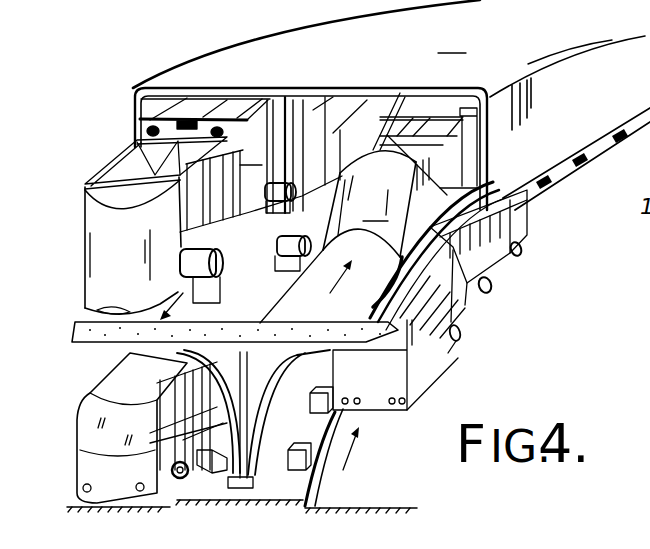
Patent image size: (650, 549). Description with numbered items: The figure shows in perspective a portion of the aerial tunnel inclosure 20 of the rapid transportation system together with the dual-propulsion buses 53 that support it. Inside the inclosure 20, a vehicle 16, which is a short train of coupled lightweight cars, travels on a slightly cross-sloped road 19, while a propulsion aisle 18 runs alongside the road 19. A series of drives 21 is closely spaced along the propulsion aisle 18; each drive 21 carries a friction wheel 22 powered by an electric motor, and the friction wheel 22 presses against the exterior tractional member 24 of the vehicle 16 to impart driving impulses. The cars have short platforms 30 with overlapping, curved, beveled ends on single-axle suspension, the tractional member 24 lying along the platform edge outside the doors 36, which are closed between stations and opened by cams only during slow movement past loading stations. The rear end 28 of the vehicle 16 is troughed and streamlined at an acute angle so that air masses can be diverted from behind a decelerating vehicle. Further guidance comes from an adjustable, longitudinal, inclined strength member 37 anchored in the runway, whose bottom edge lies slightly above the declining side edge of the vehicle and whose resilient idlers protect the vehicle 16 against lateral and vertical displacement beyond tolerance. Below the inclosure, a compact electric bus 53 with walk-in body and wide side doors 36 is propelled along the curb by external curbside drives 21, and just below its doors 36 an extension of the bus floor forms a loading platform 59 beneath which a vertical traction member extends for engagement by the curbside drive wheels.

The vehicle 16 is at (274, 162).
The propulsion aisle 18 is at (374, 106).
The road 19 is at (320, 312).
The tunnel inclosure 20 is at (389, 65).
The drive 21 is at (647, 128).
The friction wheel 22 is at (188, 256).
The tractional member 24 is at (226, 196).
The troughed rear end 28 is at (369, 204).
The platform 30 is at (417, 215).
The door 36 is at (283, 97).
The inclined strength member 37 is at (366, 282).
The bus 53 is at (432, 360).
The loading platform 59 is at (199, 460).